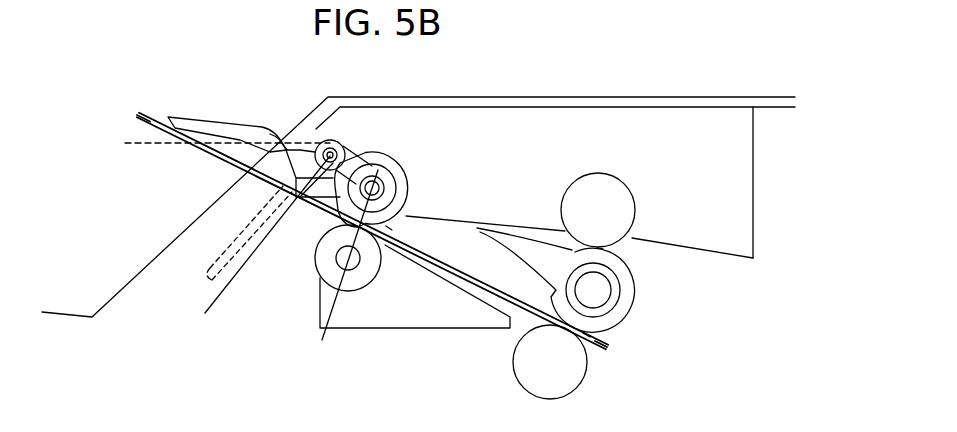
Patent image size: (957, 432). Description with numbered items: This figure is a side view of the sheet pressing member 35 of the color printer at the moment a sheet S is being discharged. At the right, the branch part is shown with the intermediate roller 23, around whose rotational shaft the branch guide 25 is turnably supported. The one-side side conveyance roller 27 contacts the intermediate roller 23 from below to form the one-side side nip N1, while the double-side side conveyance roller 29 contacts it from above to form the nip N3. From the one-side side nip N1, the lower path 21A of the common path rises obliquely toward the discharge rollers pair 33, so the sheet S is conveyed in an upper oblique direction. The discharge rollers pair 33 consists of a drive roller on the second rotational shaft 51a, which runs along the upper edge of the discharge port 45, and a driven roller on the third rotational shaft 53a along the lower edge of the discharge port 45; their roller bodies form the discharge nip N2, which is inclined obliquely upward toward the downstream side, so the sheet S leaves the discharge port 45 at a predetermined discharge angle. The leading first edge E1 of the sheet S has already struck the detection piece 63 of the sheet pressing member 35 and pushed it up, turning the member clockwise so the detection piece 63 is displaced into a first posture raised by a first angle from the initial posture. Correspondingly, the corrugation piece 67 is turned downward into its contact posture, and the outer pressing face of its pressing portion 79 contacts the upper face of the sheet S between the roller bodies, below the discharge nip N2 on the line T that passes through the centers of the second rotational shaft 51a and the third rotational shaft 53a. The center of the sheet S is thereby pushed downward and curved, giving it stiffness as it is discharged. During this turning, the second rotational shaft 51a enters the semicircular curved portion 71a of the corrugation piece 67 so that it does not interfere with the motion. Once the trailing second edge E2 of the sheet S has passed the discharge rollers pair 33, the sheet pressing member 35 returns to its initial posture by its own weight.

The sheet S is at (205, 152).
The first edge E1 is at (138, 113).
The second edge E2 is at (612, 347).
The detection piece 63 is at (193, 128).
The sheet pressing member 35 is at (311, 134).
The second rotational shaft 51a is at (356, 158).
The discharge rollers pair 33 is at (418, 181).
The corrugation piece 67 is at (392, 172).
The curved portion 71a is at (393, 190).
The discharge port 45 is at (333, 223).
The discharge nip N2 is at (392, 230).
The pressing portion 79 is at (376, 270).
The third rotational shaft 53a is at (338, 260).
The line T is at (344, 269).
The lower path 21A is at (458, 278).
The branch guide 25 is at (523, 253).
The double-side side conveyance roller 29 is at (620, 210).
The third nip portion N3 is at (606, 249).
The intermediate roller 23 is at (630, 296).
The one-side side nip N1 is at (590, 337).
The one-side side conveyance roller 27 is at (570, 372).